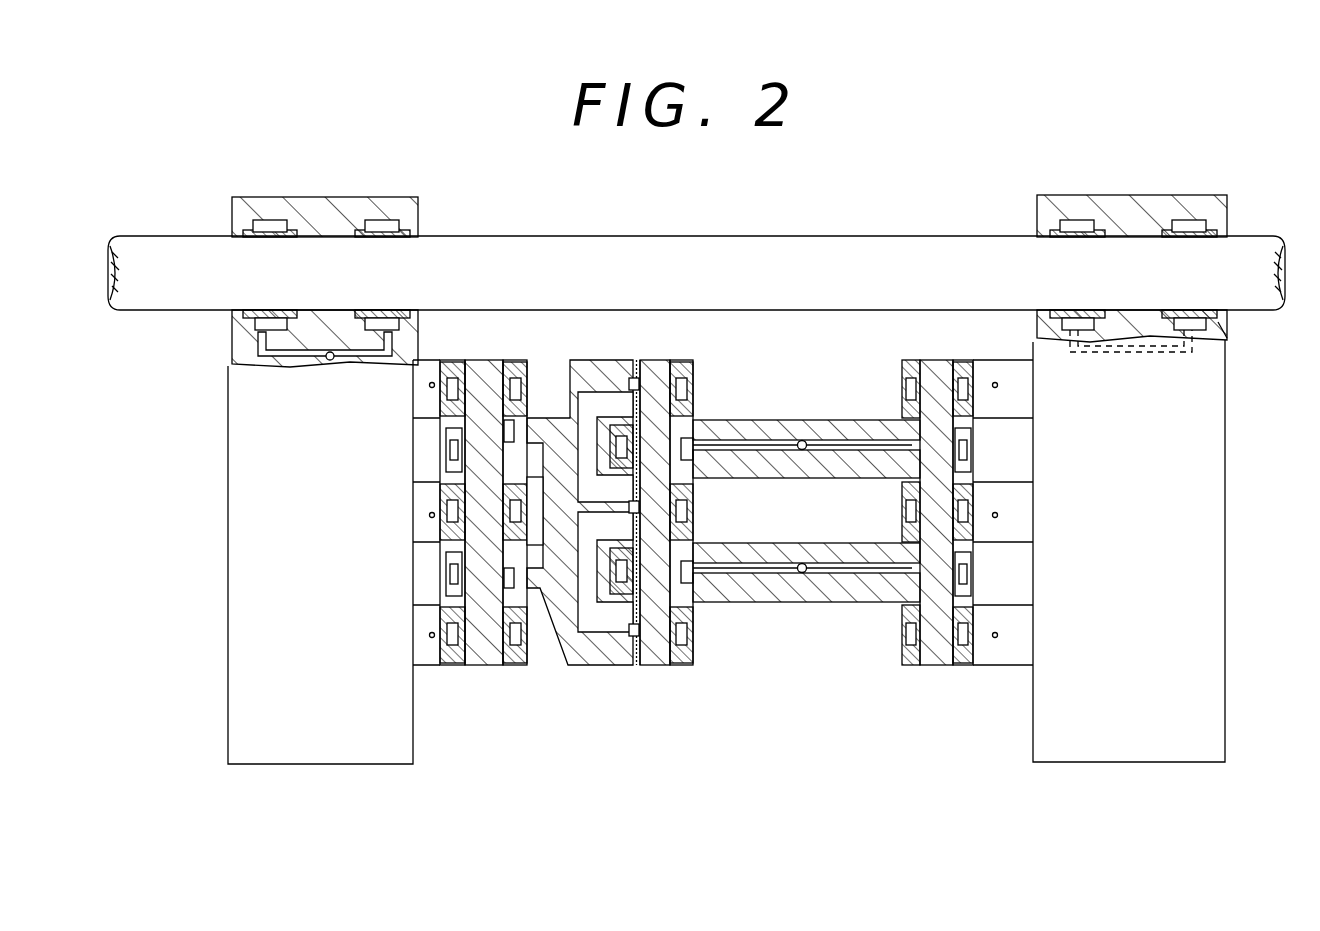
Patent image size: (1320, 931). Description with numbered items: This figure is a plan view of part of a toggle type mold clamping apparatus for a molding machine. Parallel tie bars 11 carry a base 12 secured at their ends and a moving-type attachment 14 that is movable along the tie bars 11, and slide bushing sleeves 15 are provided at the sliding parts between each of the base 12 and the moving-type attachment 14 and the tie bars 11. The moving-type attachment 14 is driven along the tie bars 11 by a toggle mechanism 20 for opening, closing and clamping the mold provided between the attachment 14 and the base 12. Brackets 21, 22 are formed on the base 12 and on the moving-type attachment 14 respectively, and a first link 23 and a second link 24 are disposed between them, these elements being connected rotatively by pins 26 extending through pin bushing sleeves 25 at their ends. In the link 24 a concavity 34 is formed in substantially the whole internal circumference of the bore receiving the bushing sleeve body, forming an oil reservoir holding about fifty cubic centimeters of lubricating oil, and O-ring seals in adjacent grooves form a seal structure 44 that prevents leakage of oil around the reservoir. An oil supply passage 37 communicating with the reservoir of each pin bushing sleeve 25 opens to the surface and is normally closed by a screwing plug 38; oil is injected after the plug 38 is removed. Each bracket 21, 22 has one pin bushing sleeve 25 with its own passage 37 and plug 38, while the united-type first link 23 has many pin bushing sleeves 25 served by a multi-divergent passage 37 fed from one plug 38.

The tie bar 11 is at (157, 255).
The base 12 is at (297, 764).
The moving-type attachment 14 is at (1122, 762).
The slide bushing sleeve 15 is at (357, 216).
The toggle mechanism 20 is at (818, 733).
The bracket 21 is at (425, 425).
The bracket 22 is at (1033, 422).
The first link 23 is at (600, 665).
The second link 24 is at (760, 420).
The pin bushing sleeve 25 is at (440, 462).
The pin 26 is at (482, 665).
The concavity 34 is at (1218, 325).
The oil supply passage 37 is at (278, 367).
The screwing plug 38 is at (330, 360).
The seal structure 44 is at (262, 342).